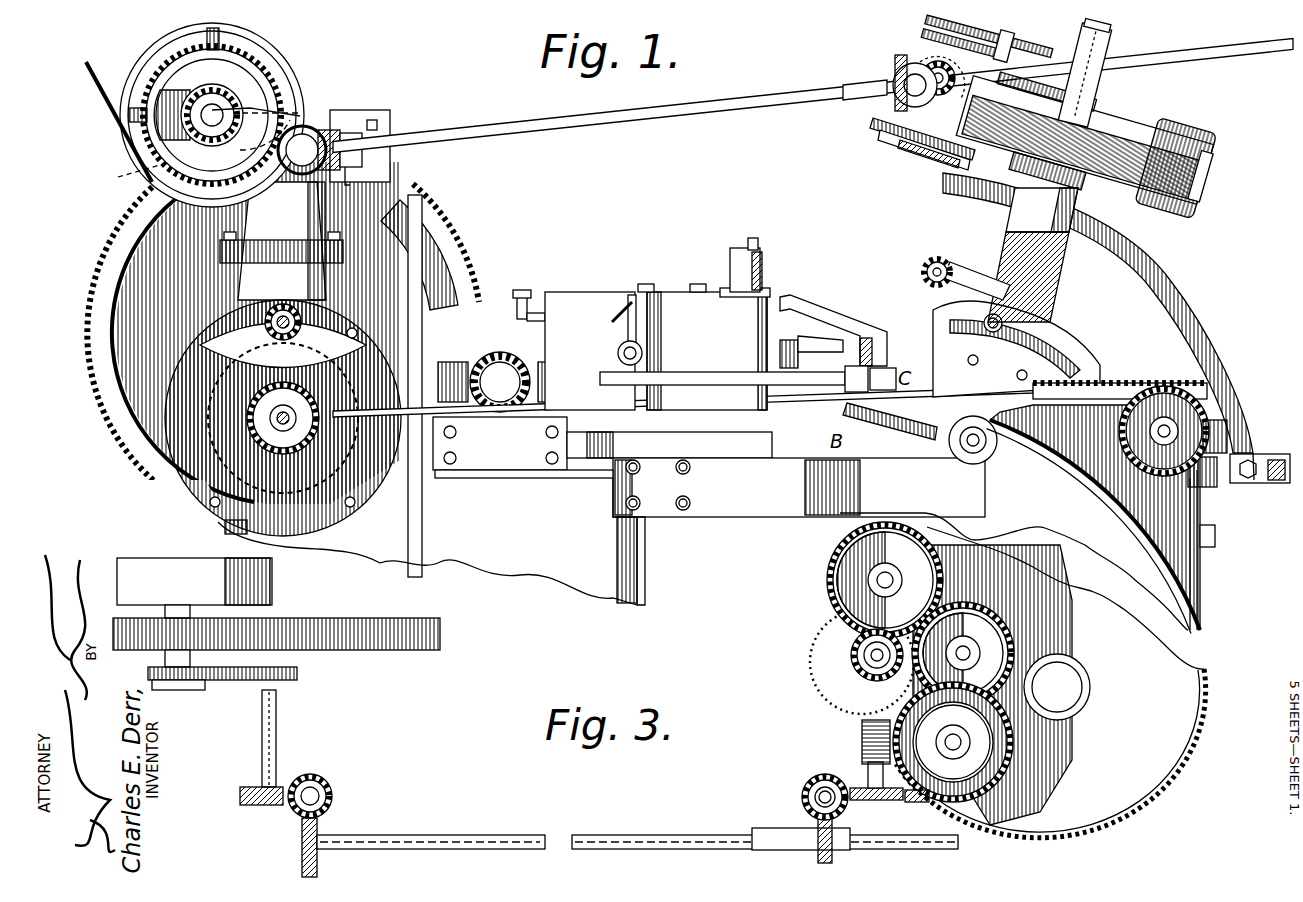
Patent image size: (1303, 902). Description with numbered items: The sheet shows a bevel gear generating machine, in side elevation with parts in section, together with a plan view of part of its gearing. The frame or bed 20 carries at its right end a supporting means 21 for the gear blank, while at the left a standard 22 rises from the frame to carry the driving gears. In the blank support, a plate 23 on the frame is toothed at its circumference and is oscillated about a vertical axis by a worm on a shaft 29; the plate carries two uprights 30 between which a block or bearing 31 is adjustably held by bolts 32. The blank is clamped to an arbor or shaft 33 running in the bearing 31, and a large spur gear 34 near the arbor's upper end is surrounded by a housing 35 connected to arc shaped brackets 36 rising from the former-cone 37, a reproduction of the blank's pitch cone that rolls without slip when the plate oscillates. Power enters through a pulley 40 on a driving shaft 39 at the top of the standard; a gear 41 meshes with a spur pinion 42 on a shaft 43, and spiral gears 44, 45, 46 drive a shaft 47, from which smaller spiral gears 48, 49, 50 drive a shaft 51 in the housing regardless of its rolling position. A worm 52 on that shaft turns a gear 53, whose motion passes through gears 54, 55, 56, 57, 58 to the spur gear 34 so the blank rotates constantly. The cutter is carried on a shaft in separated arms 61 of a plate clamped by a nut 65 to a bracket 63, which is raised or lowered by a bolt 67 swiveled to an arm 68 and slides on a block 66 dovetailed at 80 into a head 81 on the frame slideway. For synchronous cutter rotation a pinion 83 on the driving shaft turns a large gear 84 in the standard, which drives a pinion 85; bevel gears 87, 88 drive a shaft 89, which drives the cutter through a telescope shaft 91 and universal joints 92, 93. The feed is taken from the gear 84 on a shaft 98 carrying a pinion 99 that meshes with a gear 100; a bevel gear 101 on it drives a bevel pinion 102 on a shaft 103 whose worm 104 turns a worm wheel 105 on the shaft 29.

In FIG. 1, the frame or bed 20 is at (638, 584).
In FIG. 1, the supporting means 21 is at (1055, 292).
In FIG. 1, the standard 22 is at (261, 242).
In FIG. 1, the plate 23 is at (958, 454).
In FIG. 1, the shaft 29 is at (1172, 426).
In FIG. 1, the uprights 30 is at (1045, 370).
In FIG. 1, the block or bearing 31 is at (1062, 256).
In FIG. 1, the bolts 32 is at (997, 347).
In FIG. 1, the arbor or shaft 33 is at (1112, 32).
In FIG. 1, the large spur gear 34 is at (1136, 122).
In FIG. 3, the large spur gear 34 is at (1140, 796).
In FIG. 1, the housing 35 is at (1180, 140).
In FIG. 1, the arc shaped brackets 36 is at (1175, 290).
In FIG. 1, the former-cone 37 is at (1252, 454).
In FIG. 1, the driving shaft 39 is at (214, 108).
In FIG. 1, the pulley 40 is at (160, 58).
In FIG. 3, the pulley 40 is at (165, 560).
In FIG. 1, the gear 41 is at (278, 88).
In FIG. 3, the gear 41 is at (233, 686).
In FIG. 3, the spur pinion 42 is at (300, 673).
In FIG. 3, the shaft 43 is at (278, 742).
In FIG. 1, the spiral gear 44 is at (292, 166).
In FIG. 3, the spiral gear 44 is at (266, 806).
In FIG. 1, the spiral gear 45 is at (366, 110).
In FIG. 3, the spiral gear 45 is at (322, 783).
In FIG. 1, the spiral gear 46 is at (347, 178).
In FIG. 3, the spiral gear 46 is at (320, 840).
In FIG. 1, the shaft 47 is at (601, 119).
In FIG. 3, the shaft 47 is at (505, 838).
In FIG. 1, the smaller spiral gear 48 is at (876, 135).
In FIG. 3, the smaller spiral gear 48 is at (835, 858).
In FIG. 1, the smaller spiral gear 49 is at (882, 118).
In FIG. 3, the smaller spiral gear 49 is at (803, 797).
In FIG. 1, the smaller spiral gear 50 is at (930, 152).
In FIG. 3, the smaller spiral gear 50 is at (882, 800).
In FIG. 3, the shaft 51 is at (866, 776).
In FIG. 3, the worm 52 is at (862, 742).
In FIG. 1, the gear 53 is at (1086, 100).
In FIG. 3, the gear 53 is at (945, 802).
In FIG. 1, the gear 54 is at (1010, 42).
In FIG. 3, the gear 54 is at (1012, 758).
In FIG. 1, the gear 55 is at (1050, 55).
In FIG. 3, the gear 55 is at (1010, 648).
In FIG. 1, the gear 56 is at (925, 25).
In FIG. 3, the gear 56 is at (830, 568).
In FIG. 1, the gear 57 is at (936, 60).
In FIG. 3, the gear 57 is at (854, 665).
In FIG. 1, the gear 58 is at (912, 160).
In FIG. 3, the gear 58 is at (840, 648).
In FIG. 1, the arms 61 is at (872, 370).
In FIG. 1, the bracket 63 is at (805, 303).
In FIG. 1, the nut 65 is at (845, 340).
In FIG. 1, the block 66 is at (668, 300).
In FIG. 1, the bolt 67 is at (763, 275).
In FIG. 1, the arm 68 is at (738, 255).
In FIG. 1, the dovetail 80 is at (642, 338).
In FIG. 1, the head 81 is at (586, 300).
In FIG. 1, the pinion 83 is at (120, 178).
In FIG. 3, the pinion 83 is at (166, 640).
In FIG. 1, the large gear 84 is at (88, 322).
In FIG. 3, the large gear 84 is at (340, 622).
In FIG. 1, the pinion 85 is at (500, 350).
In FIG. 1, the bevel gear 87 is at (528, 347).
In FIG. 1, the bevel gear 88 is at (580, 368).
In FIG. 1, the shaft 89 is at (590, 462).
In FIG. 1, the telescope shaft 91 is at (716, 370).
In FIG. 1, the universal joint 92 is at (615, 392).
In FIG. 1, the universal joint 93 is at (866, 362).
In FIG. 1, the shaft 98 is at (300, 320).
In FIG. 1, the pinion 99 is at (305, 298).
In FIG. 1, the gear 100 is at (340, 345).
In FIG. 1, the bevel gear 101 is at (296, 398).
In FIG. 1, the bevel pinion 102 is at (268, 469).
In FIG. 1, the shaft 103 is at (500, 443).
In FIG. 1, the worm 104 is at (1145, 368).
In FIG. 1, the worm wheel 105 is at (1212, 385).